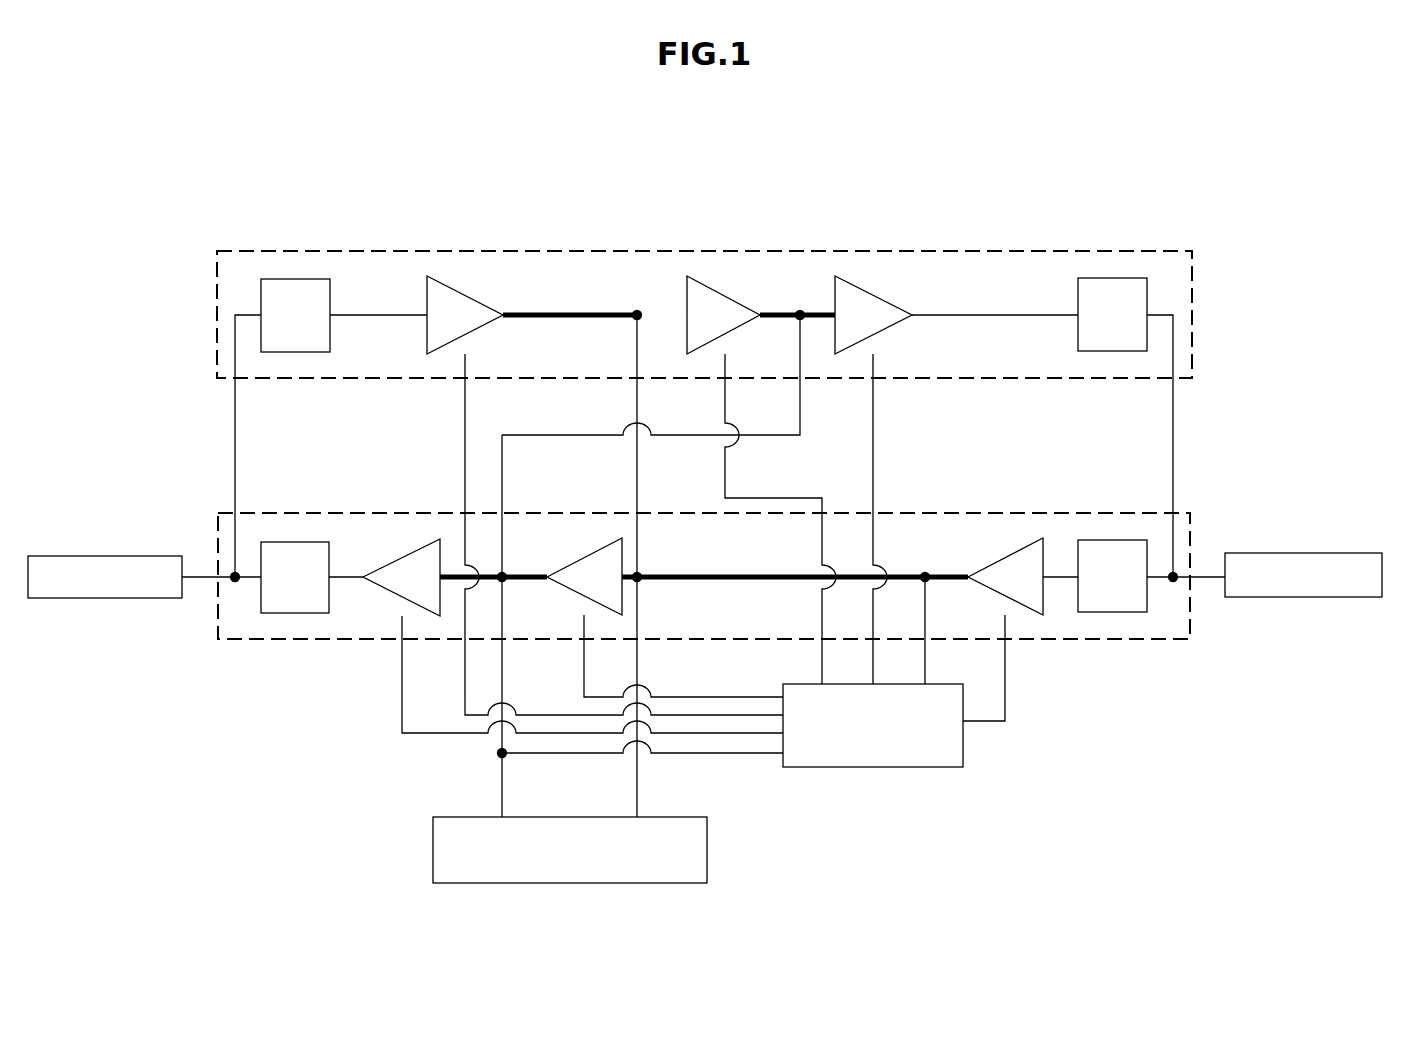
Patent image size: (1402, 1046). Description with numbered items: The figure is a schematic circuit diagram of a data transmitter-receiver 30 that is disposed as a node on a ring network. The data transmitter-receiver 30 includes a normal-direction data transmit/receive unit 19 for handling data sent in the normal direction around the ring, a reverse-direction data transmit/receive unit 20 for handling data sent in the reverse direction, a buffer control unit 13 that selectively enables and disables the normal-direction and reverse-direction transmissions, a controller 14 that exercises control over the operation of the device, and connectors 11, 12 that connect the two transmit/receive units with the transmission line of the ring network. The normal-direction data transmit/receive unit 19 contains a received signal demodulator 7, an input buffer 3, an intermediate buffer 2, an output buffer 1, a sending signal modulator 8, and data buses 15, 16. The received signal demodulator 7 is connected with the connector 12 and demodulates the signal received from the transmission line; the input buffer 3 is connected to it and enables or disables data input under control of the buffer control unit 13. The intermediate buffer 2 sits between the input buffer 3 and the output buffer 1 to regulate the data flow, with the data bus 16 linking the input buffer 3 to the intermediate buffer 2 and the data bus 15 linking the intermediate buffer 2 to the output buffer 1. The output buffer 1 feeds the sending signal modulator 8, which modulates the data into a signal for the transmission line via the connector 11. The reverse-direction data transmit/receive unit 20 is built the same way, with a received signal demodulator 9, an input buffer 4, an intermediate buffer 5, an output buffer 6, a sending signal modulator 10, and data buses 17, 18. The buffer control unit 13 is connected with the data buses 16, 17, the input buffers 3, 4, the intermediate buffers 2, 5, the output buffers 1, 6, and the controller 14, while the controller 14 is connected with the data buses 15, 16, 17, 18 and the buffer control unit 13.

The output buffer 1 is at (401, 556).
The intermediate buffer 2 is at (587, 556).
The input buffer 3 is at (1000, 556).
The input buffer 4 is at (462, 290).
The intermediate buffer 5 is at (723, 290).
The output buffer 6 is at (872, 290).
The received signal demodulator 7 is at (1110, 540).
The sending signal modulator 8 is at (290, 542).
The received signal demodulator 9 is at (290, 279).
The sending signal modulator 10 is at (1108, 278).
The connector 11 is at (105, 600).
The connector 12 is at (1303, 598).
The buffer control unit 13 is at (963, 742).
The controller 14 is at (707, 850).
The data bus 15 is at (527, 577).
The data bus 16 is at (773, 579).
The data bus 17 is at (580, 313).
The data bus 18 is at (787, 313).
The normal-direction data transmit/receive unit 19 is at (1192, 528).
The reverse-direction data transmit/receive unit 20 is at (1192, 332).
The data transmitter-receiver 30 is at (1262, 243).